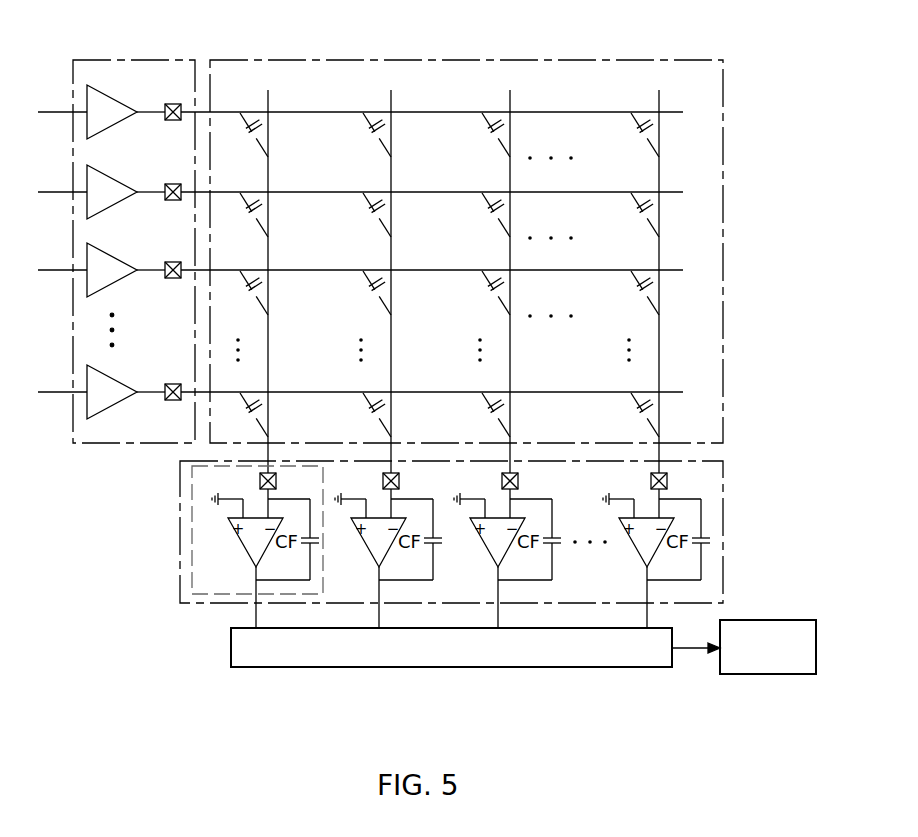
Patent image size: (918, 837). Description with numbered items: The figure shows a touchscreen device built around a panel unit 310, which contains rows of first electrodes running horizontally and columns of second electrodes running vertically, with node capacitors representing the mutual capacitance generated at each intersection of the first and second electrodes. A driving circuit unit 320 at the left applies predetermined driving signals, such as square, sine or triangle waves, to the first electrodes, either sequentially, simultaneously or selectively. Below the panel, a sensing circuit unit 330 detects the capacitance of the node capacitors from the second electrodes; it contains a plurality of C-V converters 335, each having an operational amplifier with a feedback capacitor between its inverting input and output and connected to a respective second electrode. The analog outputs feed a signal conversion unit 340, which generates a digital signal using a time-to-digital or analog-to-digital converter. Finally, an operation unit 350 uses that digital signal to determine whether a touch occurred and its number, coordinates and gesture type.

The panel unit 310 is at (481, 59).
The driving circuit unit 320 is at (131, 59).
The sensing circuit unit 330 is at (416, 544).
The C-V converter 335 is at (192, 562).
The signal conversion unit 340 is at (450, 669).
The operation unit 350 is at (765, 676).